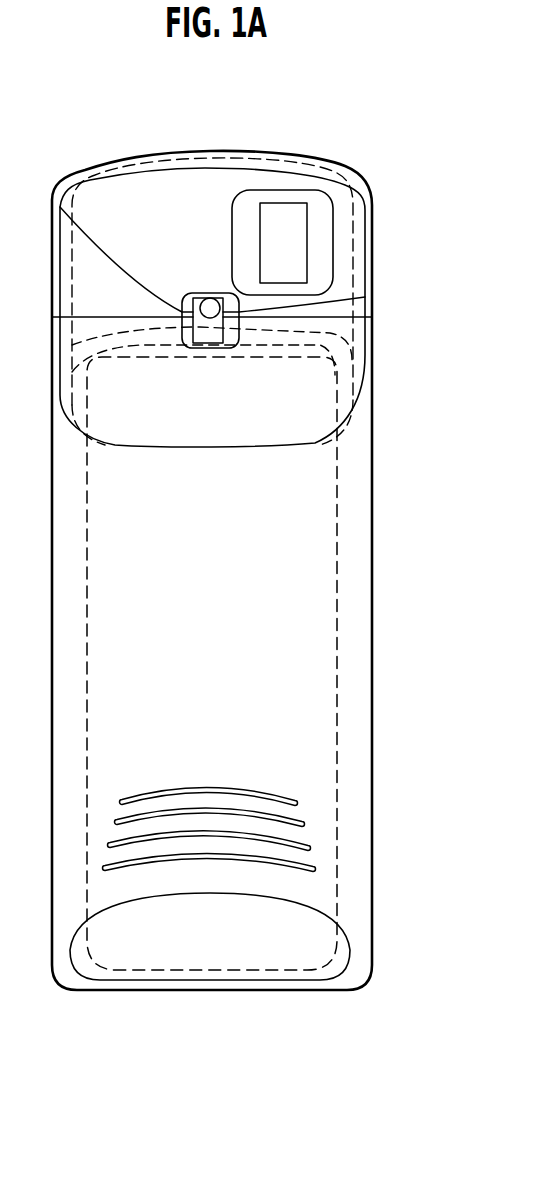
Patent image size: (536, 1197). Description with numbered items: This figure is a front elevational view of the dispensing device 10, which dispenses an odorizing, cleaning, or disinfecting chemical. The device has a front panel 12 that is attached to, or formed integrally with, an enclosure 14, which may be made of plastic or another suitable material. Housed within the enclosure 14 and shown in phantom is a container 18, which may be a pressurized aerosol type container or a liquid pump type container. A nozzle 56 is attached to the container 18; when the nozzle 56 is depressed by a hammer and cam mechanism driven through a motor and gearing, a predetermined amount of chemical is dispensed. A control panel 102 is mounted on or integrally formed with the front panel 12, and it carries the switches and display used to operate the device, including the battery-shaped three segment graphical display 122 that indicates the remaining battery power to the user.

The dispensing device 10 is at (418, 746).
The front panel 12 is at (340, 250).
The enclosure 14 is at (372, 332).
The container 18 is at (318, 508).
The nozzle 56 is at (211, 299).
The control panel 102 is at (340, 335).
The three segment LCD graphical display 122 is at (312, 236).